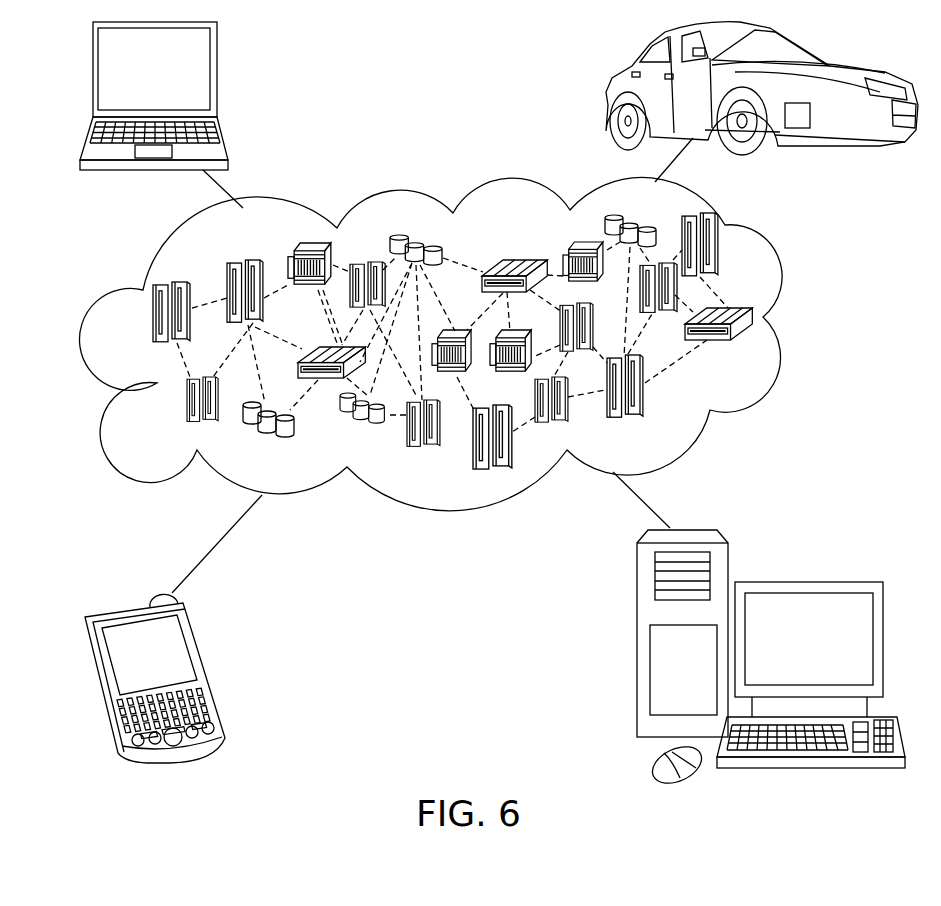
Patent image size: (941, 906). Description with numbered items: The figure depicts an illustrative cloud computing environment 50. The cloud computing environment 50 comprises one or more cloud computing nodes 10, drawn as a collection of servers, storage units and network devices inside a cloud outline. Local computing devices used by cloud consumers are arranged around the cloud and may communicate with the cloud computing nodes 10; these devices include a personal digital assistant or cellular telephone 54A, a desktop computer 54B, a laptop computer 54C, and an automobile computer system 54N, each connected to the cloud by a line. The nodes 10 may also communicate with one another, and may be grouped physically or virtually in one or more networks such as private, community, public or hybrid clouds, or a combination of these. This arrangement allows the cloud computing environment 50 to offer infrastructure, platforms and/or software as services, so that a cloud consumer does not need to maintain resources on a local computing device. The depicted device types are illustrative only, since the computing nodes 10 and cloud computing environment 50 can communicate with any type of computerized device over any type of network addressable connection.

The cloud computing node 10 is at (762, 351).
The cloud computing environment 50 is at (807, 323).
The personal digital assistant or cellular telephone 54A is at (208, 665).
The desktop computer 54B is at (807, 580).
The laptop computer 54C is at (217, 76).
The automobile computer system 54N is at (608, 95).